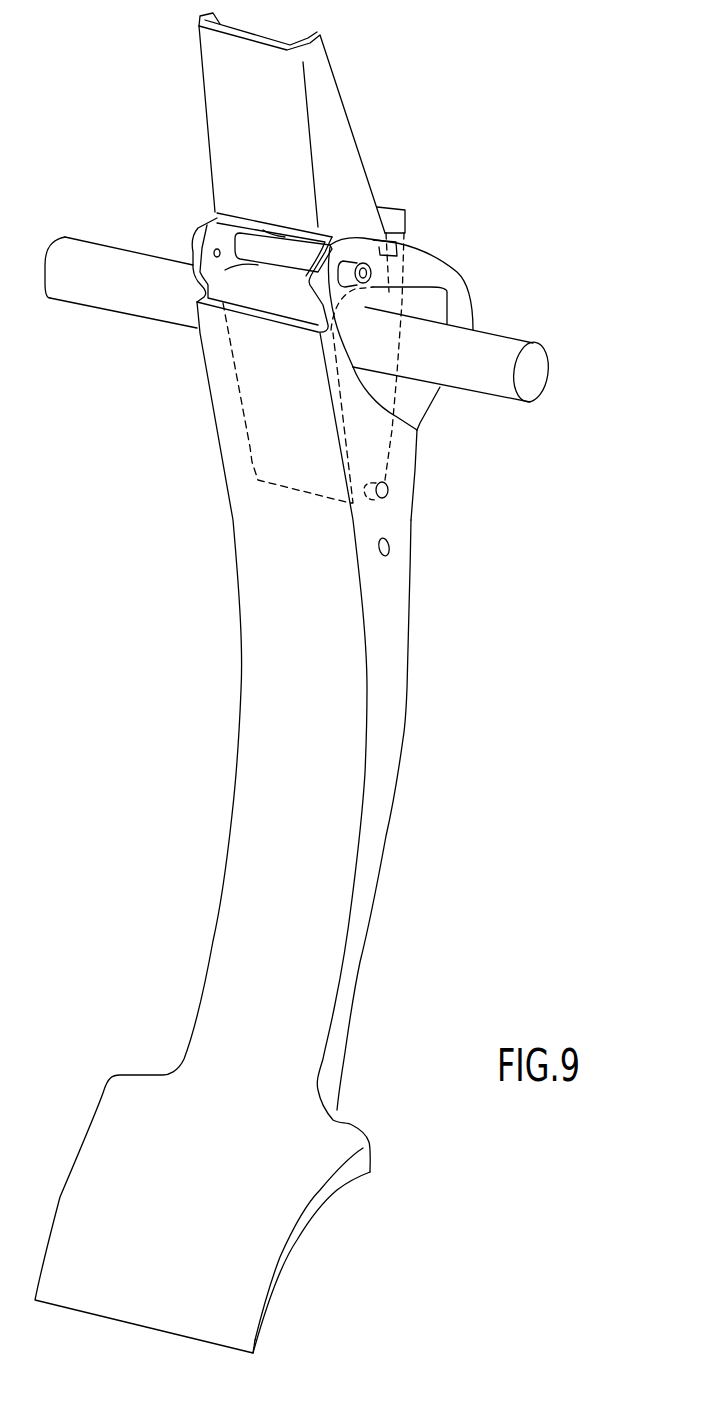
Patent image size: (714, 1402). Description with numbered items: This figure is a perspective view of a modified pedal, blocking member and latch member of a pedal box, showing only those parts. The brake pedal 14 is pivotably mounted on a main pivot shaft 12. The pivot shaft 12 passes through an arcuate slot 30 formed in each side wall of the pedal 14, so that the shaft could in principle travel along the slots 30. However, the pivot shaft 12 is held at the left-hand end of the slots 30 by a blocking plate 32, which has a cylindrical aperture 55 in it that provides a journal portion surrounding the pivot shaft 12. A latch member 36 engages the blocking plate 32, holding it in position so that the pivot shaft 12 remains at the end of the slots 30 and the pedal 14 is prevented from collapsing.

The brake pedal 14 is at (390, 724).
The latch member 36 is at (325, 79).
The main pivot shaft 12 is at (527, 387).
The arcuate slot 30 is at (427, 303).
The cylindrical aperture 55 is at (360, 390).
The blocking plate 32 is at (380, 438).